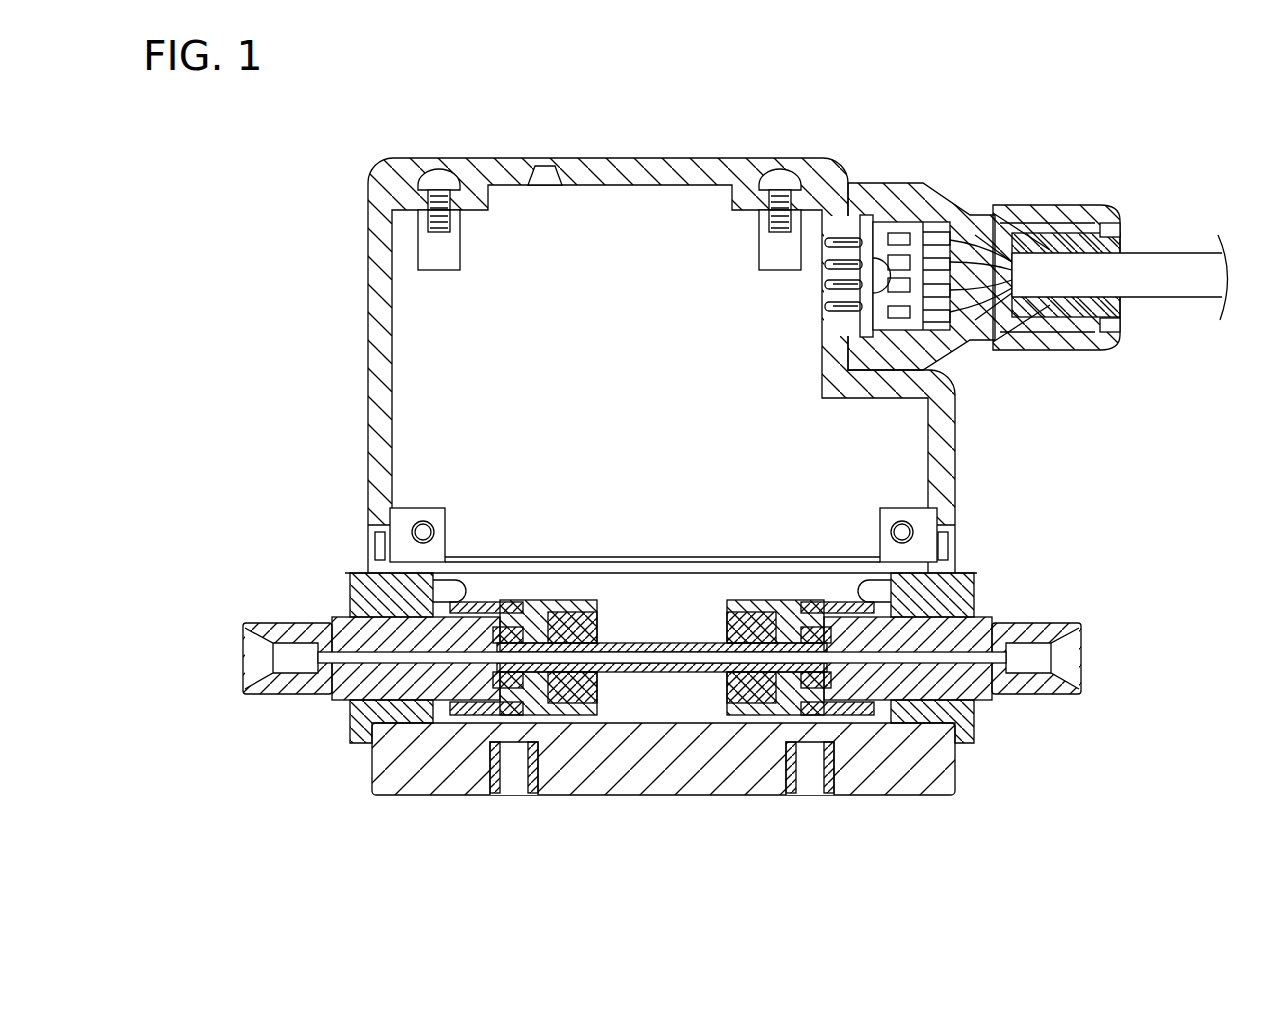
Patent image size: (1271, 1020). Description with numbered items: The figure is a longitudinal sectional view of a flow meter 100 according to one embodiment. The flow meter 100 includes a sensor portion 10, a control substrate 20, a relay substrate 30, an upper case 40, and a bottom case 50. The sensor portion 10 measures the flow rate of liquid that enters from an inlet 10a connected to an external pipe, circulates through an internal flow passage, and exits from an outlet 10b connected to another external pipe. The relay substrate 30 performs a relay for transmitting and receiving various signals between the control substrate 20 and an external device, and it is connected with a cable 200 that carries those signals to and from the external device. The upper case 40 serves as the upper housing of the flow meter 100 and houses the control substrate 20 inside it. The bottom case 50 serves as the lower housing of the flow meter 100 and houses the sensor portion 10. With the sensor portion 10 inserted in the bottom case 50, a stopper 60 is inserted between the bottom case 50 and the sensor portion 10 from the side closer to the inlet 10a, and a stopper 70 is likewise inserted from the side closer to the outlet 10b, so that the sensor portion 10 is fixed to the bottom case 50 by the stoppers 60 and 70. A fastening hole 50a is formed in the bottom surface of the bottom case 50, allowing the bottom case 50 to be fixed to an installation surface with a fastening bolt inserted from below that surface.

The flow meter 100 is at (834, 92).
The upper case 40 is at (586, 157).
The relay substrate 30 is at (950, 190).
The cable 200 is at (1098, 160).
The control substrate 20 is at (952, 462).
The sensor portion 10 is at (1085, 595).
The inlet 10a is at (250, 651).
The outlet 10b is at (1075, 652).
The stopper 60 is at (348, 716).
The stopper 70 is at (976, 714).
The bottom case 50 is at (630, 797).
The fastening hole 50a is at (518, 782).